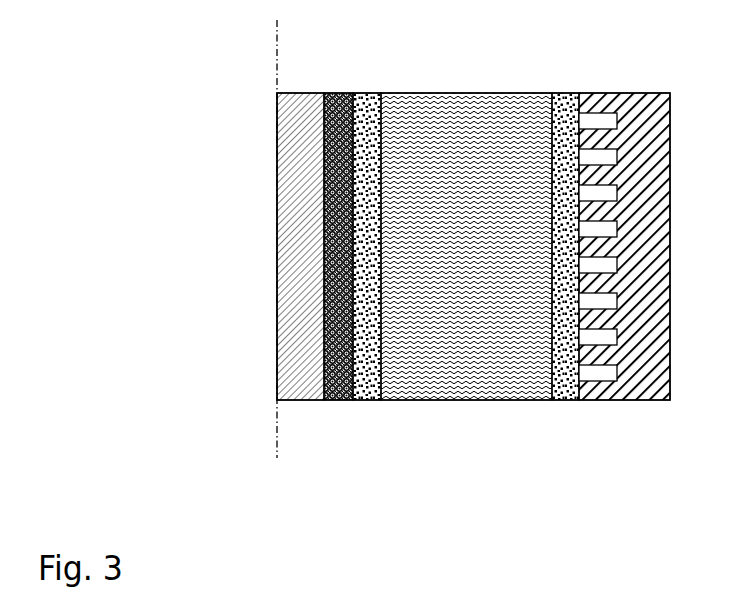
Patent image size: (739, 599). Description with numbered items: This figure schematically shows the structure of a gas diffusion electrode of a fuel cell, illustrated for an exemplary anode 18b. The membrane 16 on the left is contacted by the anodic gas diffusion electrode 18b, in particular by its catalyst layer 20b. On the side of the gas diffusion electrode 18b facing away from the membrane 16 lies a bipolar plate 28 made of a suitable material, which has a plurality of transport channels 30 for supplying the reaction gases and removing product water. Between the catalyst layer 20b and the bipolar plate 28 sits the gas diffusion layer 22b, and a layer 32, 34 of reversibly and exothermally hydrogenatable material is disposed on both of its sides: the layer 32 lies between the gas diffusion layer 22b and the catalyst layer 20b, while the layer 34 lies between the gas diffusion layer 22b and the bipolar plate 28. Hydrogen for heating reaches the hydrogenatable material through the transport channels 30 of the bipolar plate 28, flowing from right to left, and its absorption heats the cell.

The membrane 16 is at (308, 88).
The anodic gas diffusion electrode 18b is at (451, 276).
The catalyst layer 20b is at (340, 375).
The gas diffusion layer 22b is at (462, 370).
The bipolar plate 28 is at (628, 110).
The transport channels 30 is at (598, 120).
The layer of hydrogenatable material 32 is at (370, 375).
The layer of hydrogenatable material 34 is at (568, 370).